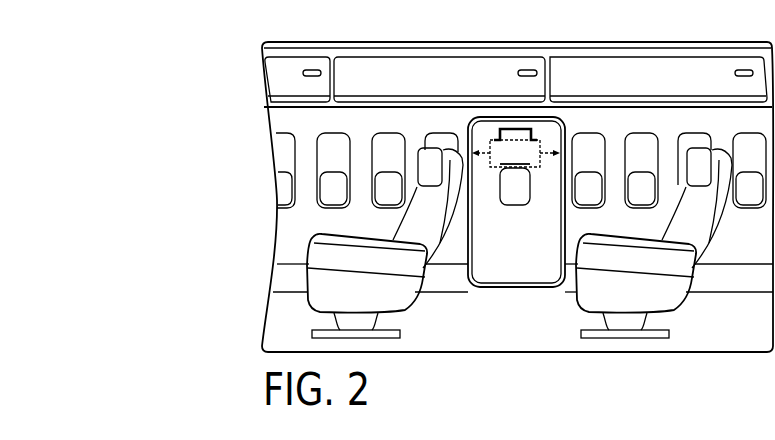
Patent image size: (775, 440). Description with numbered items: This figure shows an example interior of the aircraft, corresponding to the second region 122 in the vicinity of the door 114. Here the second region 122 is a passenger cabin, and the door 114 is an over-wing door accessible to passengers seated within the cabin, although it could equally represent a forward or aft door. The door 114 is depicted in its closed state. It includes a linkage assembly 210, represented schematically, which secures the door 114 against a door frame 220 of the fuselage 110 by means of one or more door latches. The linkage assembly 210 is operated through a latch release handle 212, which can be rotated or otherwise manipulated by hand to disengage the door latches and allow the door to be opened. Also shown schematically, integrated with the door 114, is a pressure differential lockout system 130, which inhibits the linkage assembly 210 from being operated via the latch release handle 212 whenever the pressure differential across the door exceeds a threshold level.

The fuselage 110 is at (417, 118).
The second region 122 is at (283, 121).
The door 114 is at (513, 262).
The latch release handle 212 is at (506, 127).
The pressure differential lockout system 130 is at (516, 153).
The linkage assembly 210 is at (544, 125).
The door frame 220 is at (570, 116).